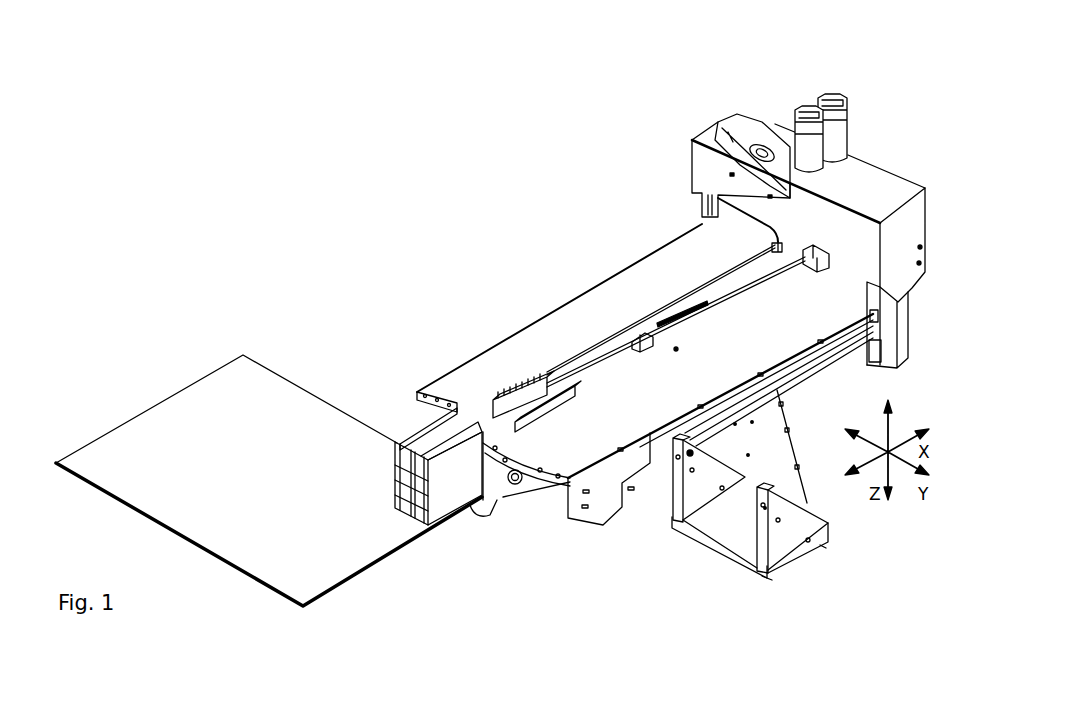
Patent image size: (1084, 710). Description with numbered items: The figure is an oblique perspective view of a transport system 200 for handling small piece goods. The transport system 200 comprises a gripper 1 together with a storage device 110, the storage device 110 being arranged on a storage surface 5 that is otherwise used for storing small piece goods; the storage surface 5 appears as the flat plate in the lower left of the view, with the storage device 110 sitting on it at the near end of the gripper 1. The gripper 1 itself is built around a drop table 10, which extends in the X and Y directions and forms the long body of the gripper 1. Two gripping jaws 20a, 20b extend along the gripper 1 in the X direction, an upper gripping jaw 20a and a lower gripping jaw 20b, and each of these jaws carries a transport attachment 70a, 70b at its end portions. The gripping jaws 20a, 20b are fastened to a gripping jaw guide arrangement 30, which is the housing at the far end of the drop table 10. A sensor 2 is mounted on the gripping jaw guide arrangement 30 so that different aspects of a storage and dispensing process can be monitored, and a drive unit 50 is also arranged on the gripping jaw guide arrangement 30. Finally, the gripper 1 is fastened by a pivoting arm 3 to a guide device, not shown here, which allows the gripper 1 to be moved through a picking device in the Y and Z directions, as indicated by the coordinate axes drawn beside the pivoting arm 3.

The transport system 200 is at (366, 122).
The gripper 1 is at (641, 215).
The drop table 10 is at (612, 300).
The storage surface 5 is at (246, 405).
The gripping jaw 20a is at (575, 358).
The gripping jaw 20b is at (627, 372).
The transport attachment 70a is at (517, 385).
The transport attachment 70b is at (557, 405).
The storage device 110 is at (475, 540).
The pivoting arm 3 is at (767, 457).
The sensor 2 is at (730, 112).
The drive unit 50 is at (865, 87).
The gripping jaw guide arrangement 30 is at (884, 134).